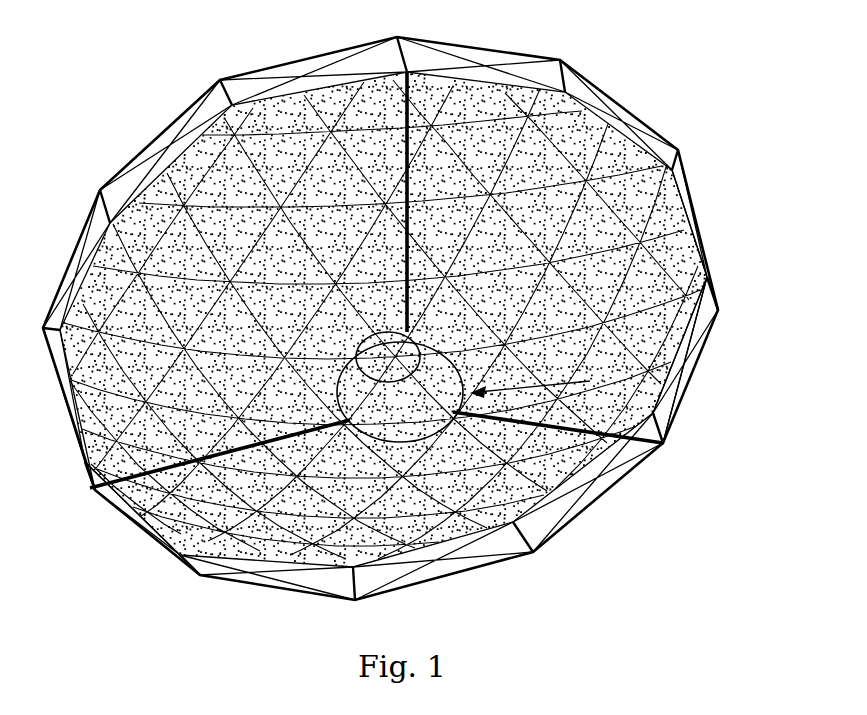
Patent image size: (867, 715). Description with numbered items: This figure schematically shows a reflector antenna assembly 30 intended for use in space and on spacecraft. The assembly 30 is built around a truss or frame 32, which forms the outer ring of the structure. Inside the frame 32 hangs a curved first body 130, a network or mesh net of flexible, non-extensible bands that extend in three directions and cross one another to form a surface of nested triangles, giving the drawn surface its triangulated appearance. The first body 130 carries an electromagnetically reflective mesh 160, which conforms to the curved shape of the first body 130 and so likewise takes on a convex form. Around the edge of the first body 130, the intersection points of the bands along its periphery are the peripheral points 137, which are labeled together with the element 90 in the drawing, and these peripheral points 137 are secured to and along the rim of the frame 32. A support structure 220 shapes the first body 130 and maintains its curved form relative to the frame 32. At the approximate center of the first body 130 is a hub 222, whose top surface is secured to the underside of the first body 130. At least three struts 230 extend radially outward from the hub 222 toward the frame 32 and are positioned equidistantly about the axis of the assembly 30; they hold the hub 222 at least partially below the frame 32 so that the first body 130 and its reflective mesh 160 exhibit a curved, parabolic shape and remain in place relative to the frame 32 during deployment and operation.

The reflector antenna assembly 30 is at (684, 93).
The frame 32 is at (704, 250).
The hub 90 is at (180, 557).
The peripheral points 137 is at (709, 278).
The first body 130 is at (563, 128).
The electromagnetically reflective mesh 160 is at (310, 74).
The support structure 220 is at (657, 396).
The hub 222 is at (488, 527).
The struts 230 is at (441, 82).